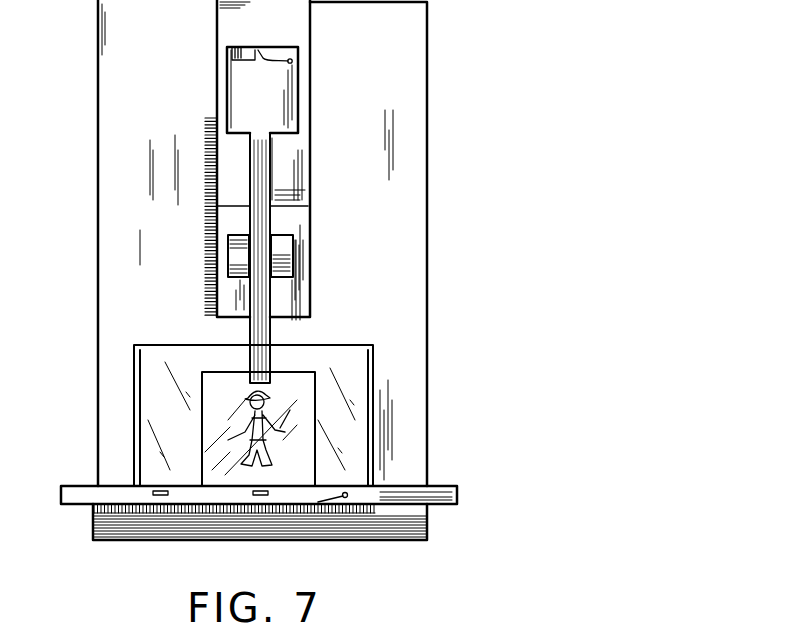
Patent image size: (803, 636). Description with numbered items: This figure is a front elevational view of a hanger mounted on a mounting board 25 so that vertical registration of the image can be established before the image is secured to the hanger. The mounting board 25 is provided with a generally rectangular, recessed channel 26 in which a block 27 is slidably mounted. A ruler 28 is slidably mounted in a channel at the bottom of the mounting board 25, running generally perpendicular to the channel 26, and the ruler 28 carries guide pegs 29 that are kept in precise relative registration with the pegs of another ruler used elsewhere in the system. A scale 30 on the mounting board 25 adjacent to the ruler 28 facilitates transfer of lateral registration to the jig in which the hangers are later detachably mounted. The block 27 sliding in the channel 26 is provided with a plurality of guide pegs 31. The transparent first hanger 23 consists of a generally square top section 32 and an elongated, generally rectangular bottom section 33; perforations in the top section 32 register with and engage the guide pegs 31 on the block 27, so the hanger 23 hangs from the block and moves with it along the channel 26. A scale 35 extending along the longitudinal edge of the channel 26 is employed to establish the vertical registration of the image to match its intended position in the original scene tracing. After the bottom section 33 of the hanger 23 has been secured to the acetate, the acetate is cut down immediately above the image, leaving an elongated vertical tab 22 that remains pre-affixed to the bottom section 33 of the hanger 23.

The elongated vertical tab 22 is at (250, 365).
The first hanger 23 is at (216, 97).
The mounting board 25 is at (427, 352).
The recessed channel 26 is at (298, 262).
The block 27 is at (300, 185).
The ruler 28 is at (457, 497).
The guide pegs 29 is at (345, 498).
The scale 30 is at (340, 515).
The guide pegs 31 is at (260, 55).
The top section 32 is at (290, 108).
The bottom section 33 is at (262, 322).
The scale 35 is at (205, 258).